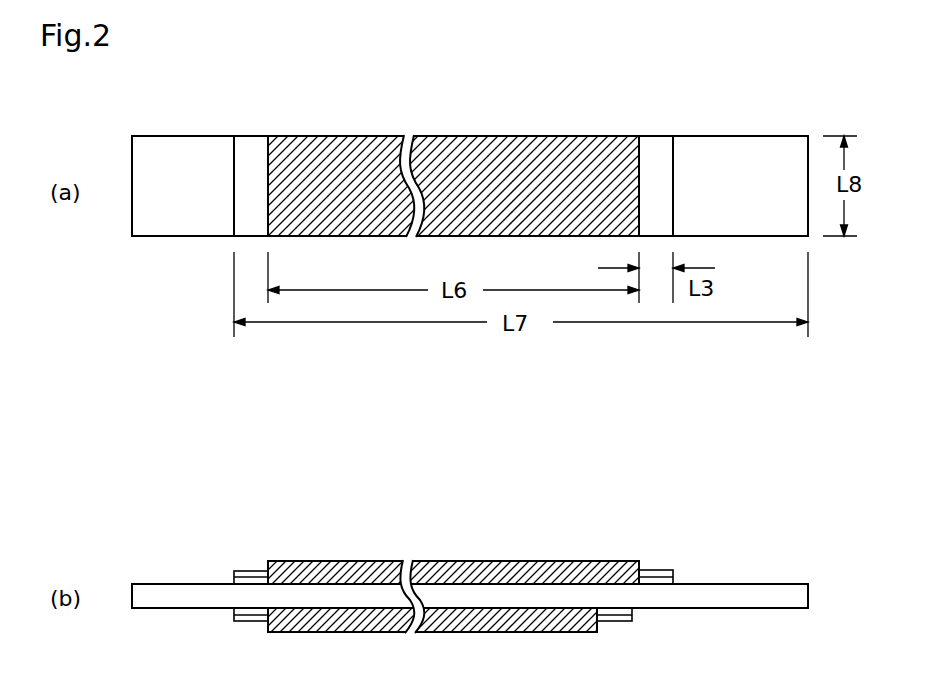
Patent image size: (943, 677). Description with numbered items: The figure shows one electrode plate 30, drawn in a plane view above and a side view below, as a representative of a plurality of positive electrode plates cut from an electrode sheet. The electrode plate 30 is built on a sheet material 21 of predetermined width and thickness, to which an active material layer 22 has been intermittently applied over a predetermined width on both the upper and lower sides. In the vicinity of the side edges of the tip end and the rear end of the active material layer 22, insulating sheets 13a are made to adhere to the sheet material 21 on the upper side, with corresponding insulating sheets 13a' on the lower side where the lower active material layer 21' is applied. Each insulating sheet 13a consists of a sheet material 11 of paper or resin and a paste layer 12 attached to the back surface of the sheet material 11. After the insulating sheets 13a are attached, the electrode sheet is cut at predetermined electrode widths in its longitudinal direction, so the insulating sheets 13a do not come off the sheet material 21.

The electrode plate 30 is at (468, 354).
The sheet material 21 is at (468, 346).
The active material layer 22 is at (375, 140).
The insulating sheet 13a is at (494, 335).
The sheet material 11 is at (670, 571).
The paste layer 12 is at (668, 578).
The adhesive layer portion on back side 13a' is at (447, 635).
The back side protective film 21' is at (432, 640).